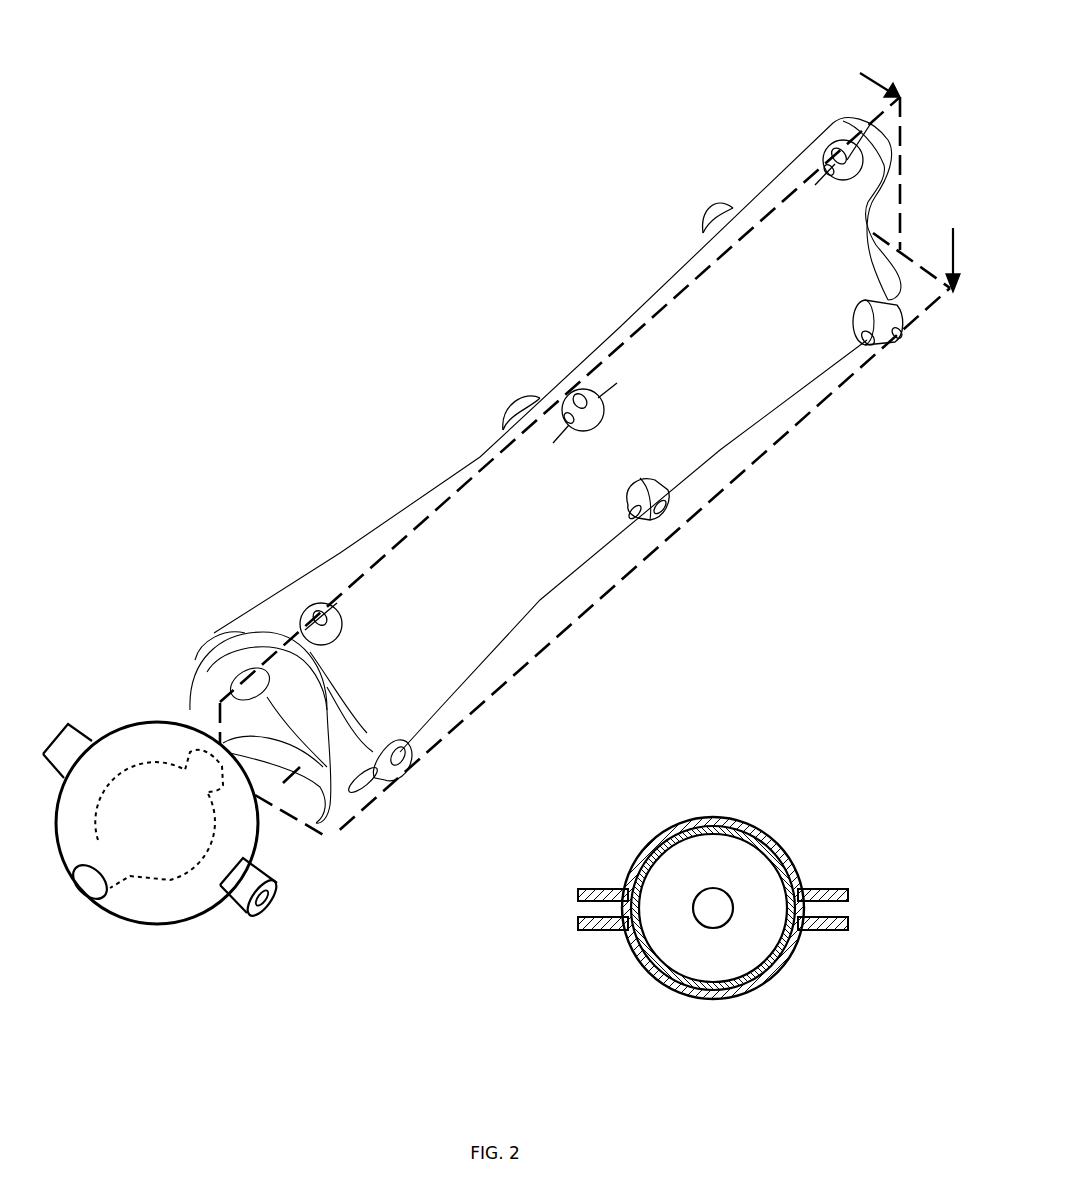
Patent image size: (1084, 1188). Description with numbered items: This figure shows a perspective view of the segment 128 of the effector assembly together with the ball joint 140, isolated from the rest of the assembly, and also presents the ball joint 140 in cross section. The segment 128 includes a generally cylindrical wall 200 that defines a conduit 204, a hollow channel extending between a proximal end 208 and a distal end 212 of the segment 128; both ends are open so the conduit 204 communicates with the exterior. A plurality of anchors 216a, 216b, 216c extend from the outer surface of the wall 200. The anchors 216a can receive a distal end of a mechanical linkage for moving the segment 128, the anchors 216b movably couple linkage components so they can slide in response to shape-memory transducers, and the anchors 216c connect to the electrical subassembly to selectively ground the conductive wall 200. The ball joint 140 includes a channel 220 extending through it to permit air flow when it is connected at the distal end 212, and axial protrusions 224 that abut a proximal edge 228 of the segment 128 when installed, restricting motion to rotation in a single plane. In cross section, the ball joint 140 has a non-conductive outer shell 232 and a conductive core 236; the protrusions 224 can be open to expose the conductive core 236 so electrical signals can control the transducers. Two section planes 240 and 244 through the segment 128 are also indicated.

The segment 128 is at (619, 326).
The ball joint 140 is at (150, 925).
The cylindrical wall 200 is at (570, 580).
The conduit 204 is at (298, 690).
The proximal end 208 is at (840, 117).
The distal end 212 is at (350, 835).
The anchors 216a is at (214, 633).
The anchors 216b is at (822, 160).
The anchors 216c is at (508, 406).
The channel 220 is at (92, 887).
The axial protrusions 224 is at (63, 727).
The proximal edge 228 is at (340, 773).
The non-conductive outer shell 232 is at (755, 993).
The conductive core 236 is at (722, 977).
The plane 240 is at (417, 527).
The plane 244 is at (647, 552).